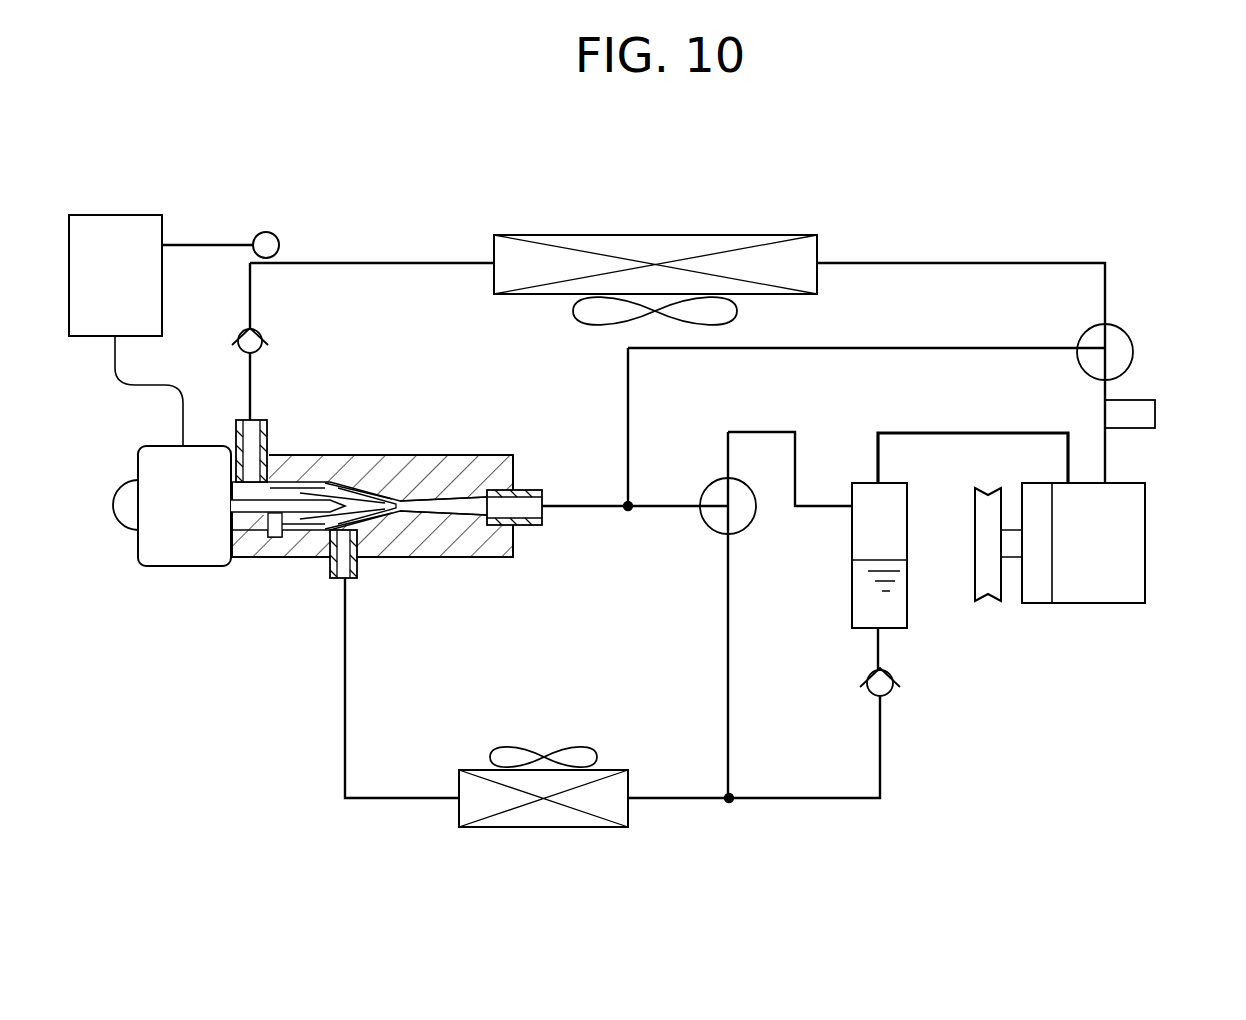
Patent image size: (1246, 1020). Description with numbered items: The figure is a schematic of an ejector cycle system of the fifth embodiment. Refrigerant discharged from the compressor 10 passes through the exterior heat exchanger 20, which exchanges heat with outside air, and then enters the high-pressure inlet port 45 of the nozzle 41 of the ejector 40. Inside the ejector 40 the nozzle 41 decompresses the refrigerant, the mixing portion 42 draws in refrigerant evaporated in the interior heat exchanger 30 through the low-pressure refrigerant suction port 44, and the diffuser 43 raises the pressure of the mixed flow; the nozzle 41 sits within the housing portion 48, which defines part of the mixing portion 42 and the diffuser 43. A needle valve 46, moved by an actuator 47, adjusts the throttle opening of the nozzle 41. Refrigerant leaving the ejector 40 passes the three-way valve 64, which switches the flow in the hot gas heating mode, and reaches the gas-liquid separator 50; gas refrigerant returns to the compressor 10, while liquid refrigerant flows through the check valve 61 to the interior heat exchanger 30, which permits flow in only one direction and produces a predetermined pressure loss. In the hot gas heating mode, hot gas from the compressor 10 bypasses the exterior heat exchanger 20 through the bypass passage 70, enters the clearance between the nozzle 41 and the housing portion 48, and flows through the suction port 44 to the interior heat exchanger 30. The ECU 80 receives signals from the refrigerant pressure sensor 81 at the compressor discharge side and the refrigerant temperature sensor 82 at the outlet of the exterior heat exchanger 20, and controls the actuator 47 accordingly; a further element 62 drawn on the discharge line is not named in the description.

The compressor 10 is at (1145, 492).
The exterior heat exchanger 20 is at (720, 235).
The interior heat exchanger 30 is at (612, 770).
The ejector 40 is at (430, 455).
The nozzle 41 is at (350, 482).
The mixing portion 42 is at (416, 502).
The diffuser 43 is at (470, 490).
The low-pressure refrigerant suction port 44 is at (338, 578).
The high-pressure inlet port 45 is at (283, 537).
The needle valve 46 is at (268, 530).
The actuator 47 is at (163, 566).
The housing portion 48 is at (485, 555).
The gas-liquid separator 50 is at (907, 497).
The check valve 61 is at (265, 338).
The pressure sensor 62 is at (1125, 333).
The three-way valve 64 is at (713, 532).
The bypass passage 70 is at (905, 348).
The electronic control unit (ECU) 80 is at (130, 215).
The refrigerant pressure sensor 81 is at (1160, 400).
The refrigerant temperature sensor 82 is at (274, 236).